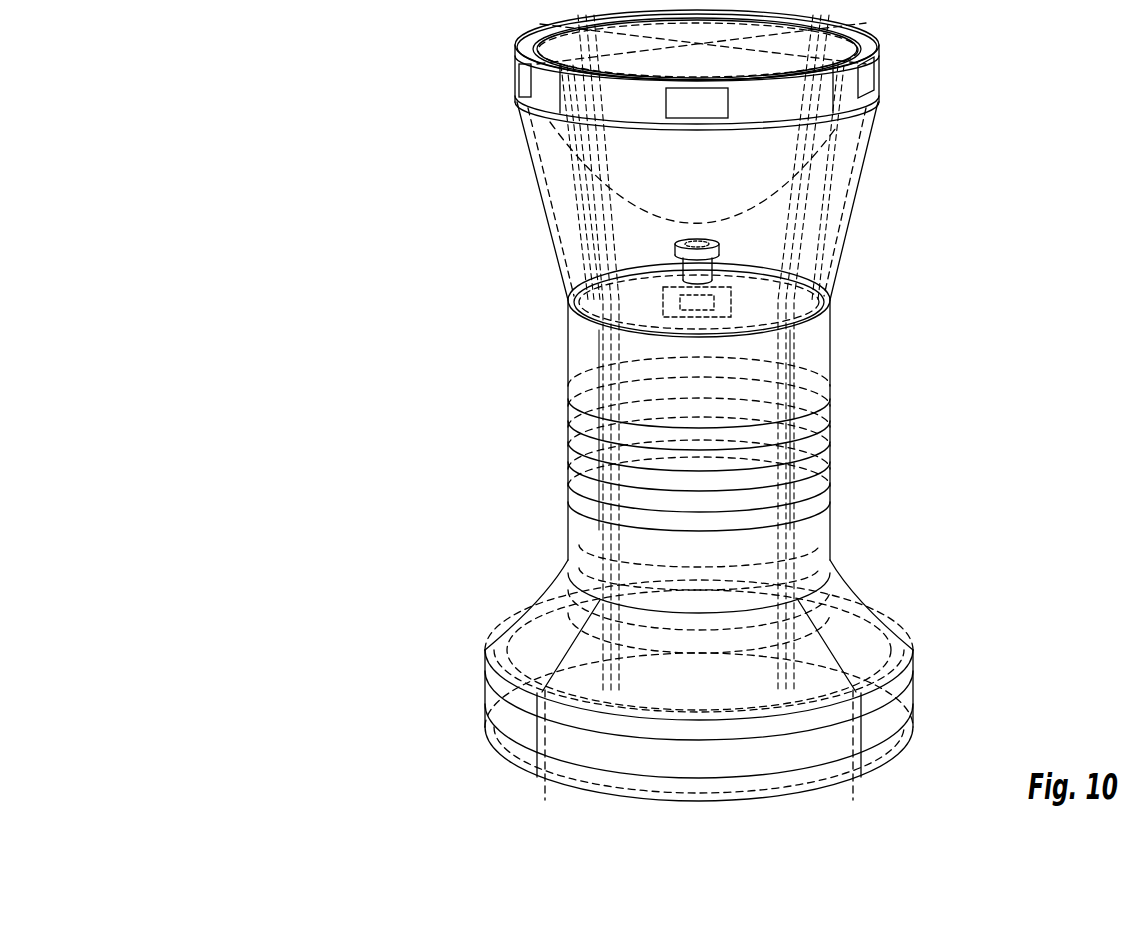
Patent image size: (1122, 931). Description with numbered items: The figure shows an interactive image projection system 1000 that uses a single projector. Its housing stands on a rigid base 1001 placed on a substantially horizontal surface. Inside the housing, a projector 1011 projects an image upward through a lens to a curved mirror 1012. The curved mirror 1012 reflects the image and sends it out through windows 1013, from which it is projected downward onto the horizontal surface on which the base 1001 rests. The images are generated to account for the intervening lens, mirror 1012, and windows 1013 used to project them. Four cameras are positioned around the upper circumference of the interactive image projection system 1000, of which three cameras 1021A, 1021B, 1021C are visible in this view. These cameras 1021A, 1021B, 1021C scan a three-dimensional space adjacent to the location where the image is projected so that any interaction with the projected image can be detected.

The interactive image projection system 1000 is at (229, 43).
The rigid base 1001 is at (913, 675).
The projector 1011 is at (715, 262).
The curved mirror 1012 is at (745, 210).
The windows 1013 is at (557, 197).
The camera 1021A is at (728, 104).
The camera 1021B is at (517, 76).
The camera 1021C is at (879, 70).